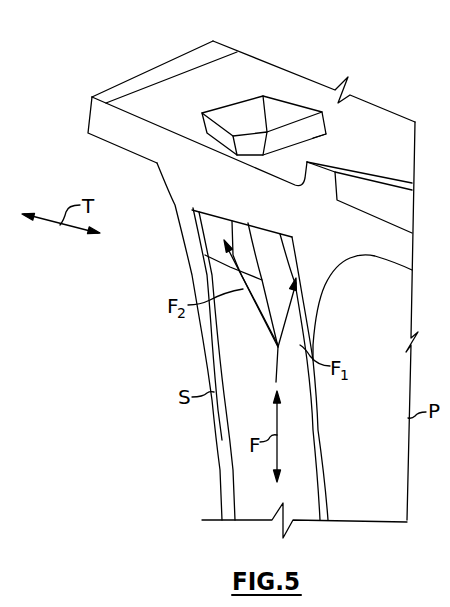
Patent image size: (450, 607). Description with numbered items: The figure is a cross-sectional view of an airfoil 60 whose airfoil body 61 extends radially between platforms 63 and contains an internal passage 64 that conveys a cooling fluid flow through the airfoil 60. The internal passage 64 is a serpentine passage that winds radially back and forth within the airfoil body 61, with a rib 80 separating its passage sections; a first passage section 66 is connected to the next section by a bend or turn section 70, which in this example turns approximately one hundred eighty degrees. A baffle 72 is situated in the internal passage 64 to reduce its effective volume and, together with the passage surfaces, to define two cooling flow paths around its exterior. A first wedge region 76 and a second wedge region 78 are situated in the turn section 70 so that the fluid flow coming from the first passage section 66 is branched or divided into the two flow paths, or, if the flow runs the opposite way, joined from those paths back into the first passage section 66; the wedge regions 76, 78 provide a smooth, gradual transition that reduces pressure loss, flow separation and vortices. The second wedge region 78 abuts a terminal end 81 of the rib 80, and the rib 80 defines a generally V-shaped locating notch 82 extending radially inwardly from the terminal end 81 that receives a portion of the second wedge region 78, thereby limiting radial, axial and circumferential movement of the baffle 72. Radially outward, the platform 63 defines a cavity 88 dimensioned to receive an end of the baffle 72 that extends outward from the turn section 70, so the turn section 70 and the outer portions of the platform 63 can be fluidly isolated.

The airfoil 60 is at (113, 77).
The airfoil body 61 is at (220, 456).
The platform 63 is at (167, 62).
The internal passage 64 is at (203, 218).
The first passage section 66 is at (222, 328).
The turn section 70 is at (209, 237).
The baffle 72 is at (296, 90).
The first wedge region 76 is at (290, 240).
The second wedge region 78 is at (288, 280).
The rib 80 is at (240, 352).
The terminal end of rib 81 is at (217, 253).
The notch 82 is at (283, 305).
The cavity 88 is at (313, 138).